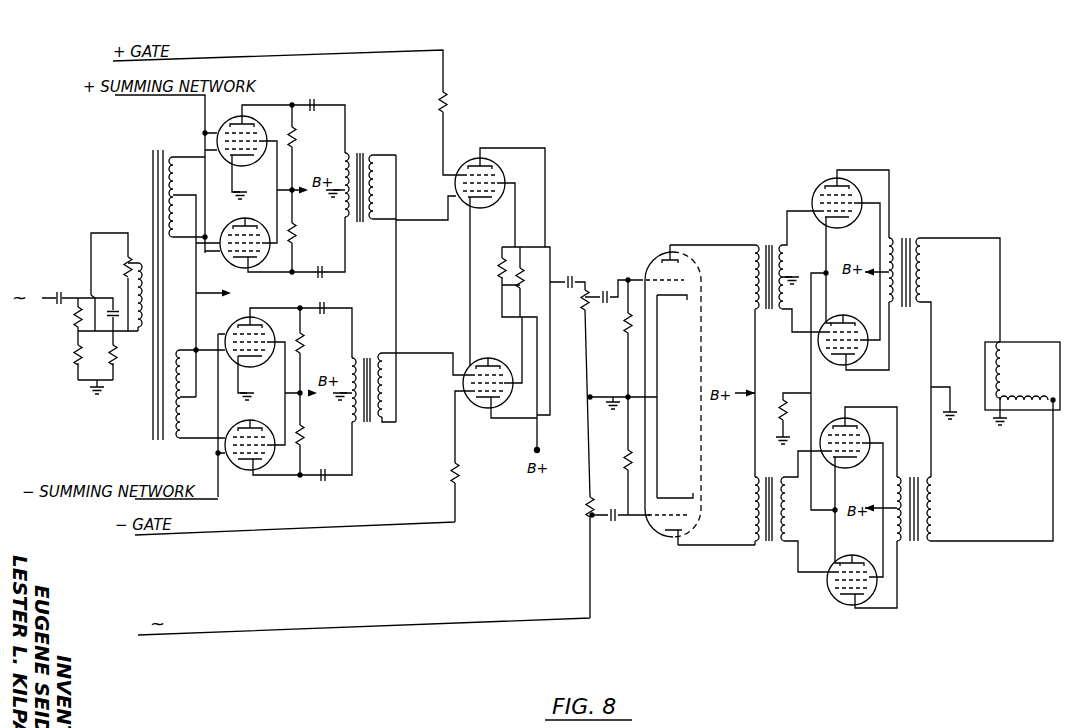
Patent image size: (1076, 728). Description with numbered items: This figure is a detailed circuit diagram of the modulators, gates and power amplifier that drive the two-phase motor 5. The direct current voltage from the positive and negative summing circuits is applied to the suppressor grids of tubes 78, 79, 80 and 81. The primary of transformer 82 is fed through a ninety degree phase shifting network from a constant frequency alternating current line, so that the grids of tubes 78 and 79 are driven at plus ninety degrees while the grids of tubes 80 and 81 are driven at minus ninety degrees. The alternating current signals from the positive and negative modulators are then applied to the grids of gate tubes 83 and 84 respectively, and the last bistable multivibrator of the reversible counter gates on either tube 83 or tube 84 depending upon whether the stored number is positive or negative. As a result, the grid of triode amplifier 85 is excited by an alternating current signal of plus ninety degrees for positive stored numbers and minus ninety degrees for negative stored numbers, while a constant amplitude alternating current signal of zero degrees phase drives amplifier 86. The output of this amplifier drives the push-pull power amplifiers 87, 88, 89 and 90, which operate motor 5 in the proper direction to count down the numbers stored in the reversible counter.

The two-phase motor 5 is at (1018, 347).
The tube 78 is at (232, 120).
The tube 79 is at (249, 222).
The tube 80 is at (242, 322).
The tube 81 is at (248, 471).
The transformer 82 is at (158, 388).
The gate tube 83 is at (468, 159).
The gate tube 84 is at (462, 385).
The triode amplifier 85 is at (653, 262).
The amplifier 86 is at (654, 519).
The push-pull power amplifier 87 is at (829, 584).
The push-pull power amplifier 88 is at (833, 422).
The push-pull power amplifier 89 is at (818, 343).
The push-pull power amplifier 90 is at (813, 189).